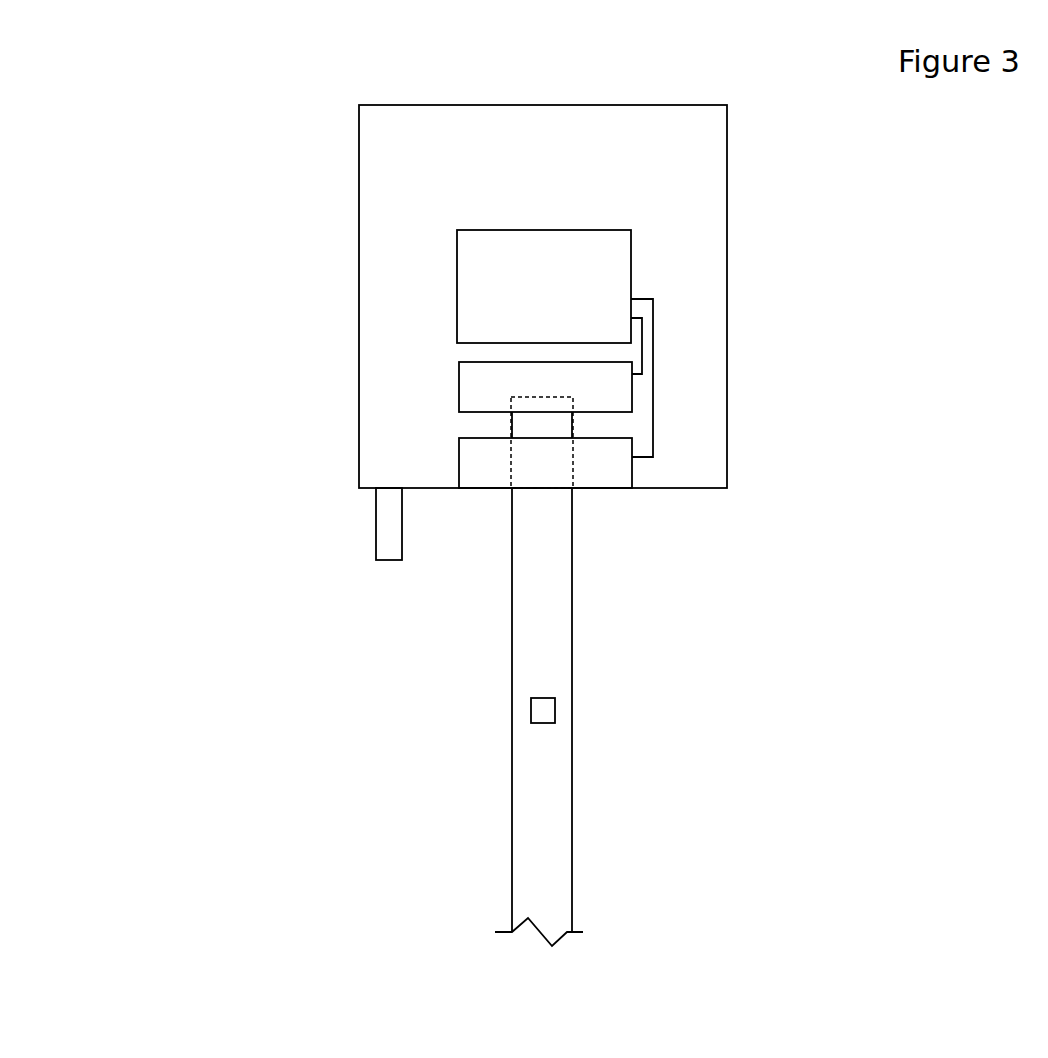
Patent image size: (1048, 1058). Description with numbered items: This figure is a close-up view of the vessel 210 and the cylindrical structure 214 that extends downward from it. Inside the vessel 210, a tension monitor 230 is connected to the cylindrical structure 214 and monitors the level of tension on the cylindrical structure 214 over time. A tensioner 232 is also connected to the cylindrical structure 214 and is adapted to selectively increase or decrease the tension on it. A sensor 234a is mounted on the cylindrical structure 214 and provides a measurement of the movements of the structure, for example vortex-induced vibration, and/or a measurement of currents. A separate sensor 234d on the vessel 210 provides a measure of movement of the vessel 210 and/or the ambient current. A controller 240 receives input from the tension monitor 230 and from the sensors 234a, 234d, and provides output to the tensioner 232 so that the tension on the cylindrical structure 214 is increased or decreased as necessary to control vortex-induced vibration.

The vessel 210 is at (563, 166).
The controller 240 is at (563, 311).
The tensioner 232 is at (480, 376).
The tension monitor 230 is at (495, 460).
The sensor 234d is at (374, 533).
The sensor 234a is at (531, 715).
The cylindrical structure 214 is at (537, 670).